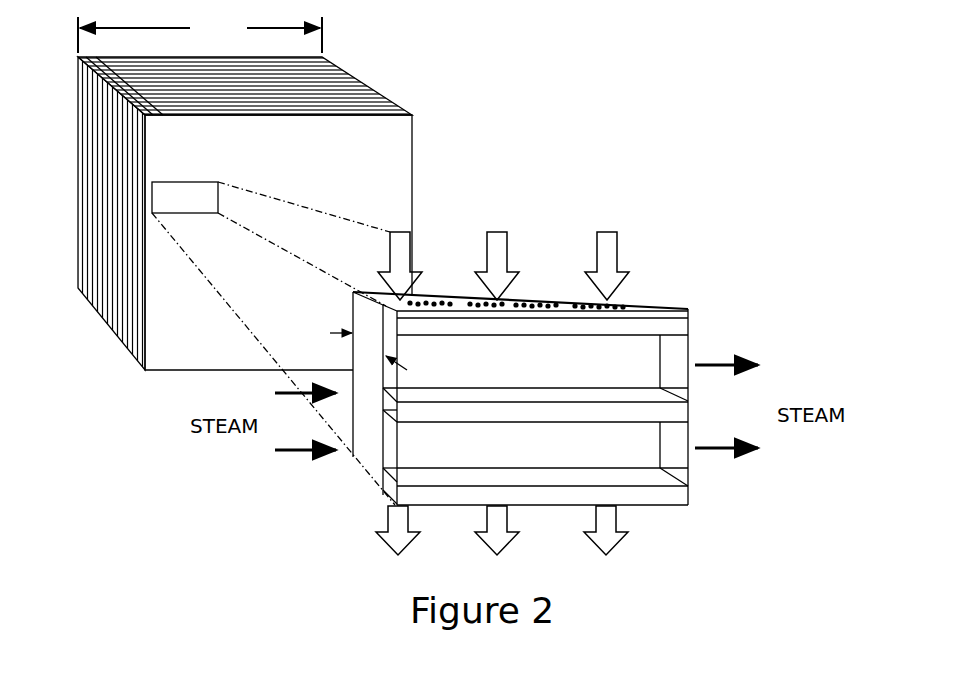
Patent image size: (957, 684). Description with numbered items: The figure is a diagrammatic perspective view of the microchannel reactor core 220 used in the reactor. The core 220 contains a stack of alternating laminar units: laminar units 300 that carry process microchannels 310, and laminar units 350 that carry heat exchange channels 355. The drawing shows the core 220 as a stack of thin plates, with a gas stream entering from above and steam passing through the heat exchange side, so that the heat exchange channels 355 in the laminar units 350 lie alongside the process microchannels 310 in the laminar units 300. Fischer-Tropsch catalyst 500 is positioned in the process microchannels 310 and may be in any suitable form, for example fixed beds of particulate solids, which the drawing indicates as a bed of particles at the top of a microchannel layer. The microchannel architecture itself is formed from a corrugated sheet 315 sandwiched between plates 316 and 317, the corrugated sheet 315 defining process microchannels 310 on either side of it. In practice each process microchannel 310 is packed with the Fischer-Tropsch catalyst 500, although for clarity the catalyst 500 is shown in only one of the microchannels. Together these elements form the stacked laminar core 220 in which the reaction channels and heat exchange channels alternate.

The microchannel reactor core 220 is at (421, 168).
The laminar unit of process microchannels 300 is at (647, 304).
The process microchannel 310 is at (389, 303).
The corrugated sheet 315 is at (638, 296).
The plate 316 is at (552, 304).
The plate 317 is at (457, 297).
The laminar unit of heat exchange channels 350 is at (679, 311).
The heat exchange channel 355 is at (653, 453).
The Fischer-Tropsch catalyst 500 is at (504, 297).